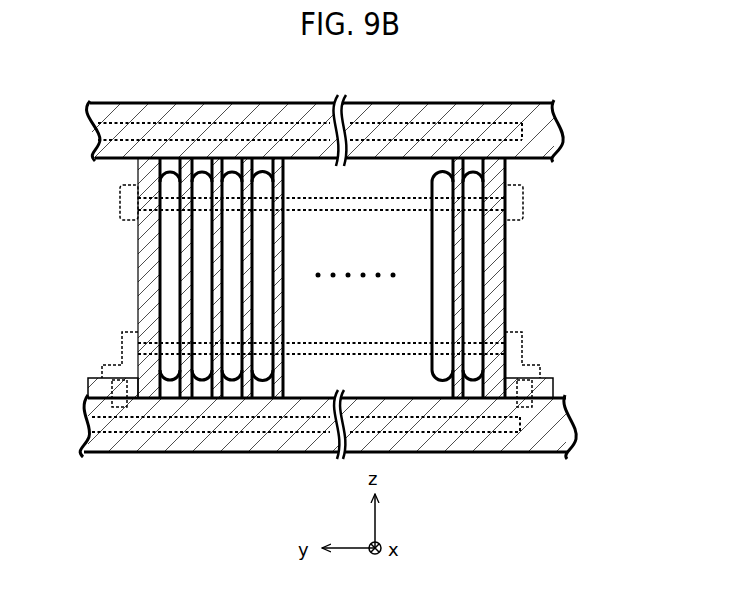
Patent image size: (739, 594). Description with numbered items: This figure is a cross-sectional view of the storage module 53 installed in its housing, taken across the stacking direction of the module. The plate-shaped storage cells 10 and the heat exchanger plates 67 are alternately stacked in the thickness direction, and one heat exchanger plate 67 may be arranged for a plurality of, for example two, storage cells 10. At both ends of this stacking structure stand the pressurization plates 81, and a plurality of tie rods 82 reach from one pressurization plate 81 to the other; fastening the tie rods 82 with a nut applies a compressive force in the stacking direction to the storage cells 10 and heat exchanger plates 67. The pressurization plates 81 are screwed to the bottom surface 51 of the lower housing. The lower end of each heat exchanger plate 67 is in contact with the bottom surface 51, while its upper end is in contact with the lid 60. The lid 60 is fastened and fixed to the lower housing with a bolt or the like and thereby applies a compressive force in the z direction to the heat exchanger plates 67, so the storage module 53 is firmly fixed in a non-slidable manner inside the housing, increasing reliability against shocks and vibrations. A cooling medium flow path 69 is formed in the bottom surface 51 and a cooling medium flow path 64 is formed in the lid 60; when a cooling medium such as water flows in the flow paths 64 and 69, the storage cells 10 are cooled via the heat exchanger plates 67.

The lid 60 is at (520, 103).
The cooling medium flow path 64 is at (259, 122).
The bottom surface 51 is at (532, 452).
The cooling medium flow path 69 is at (460, 432).
The pressurization plate 81 is at (137, 272).
The heat exchanger plate 67 is at (458, 257).
The storage cell 10 is at (473, 278).
The tie rod 82 is at (350, 197).
The storage module 53 is at (545, 197).